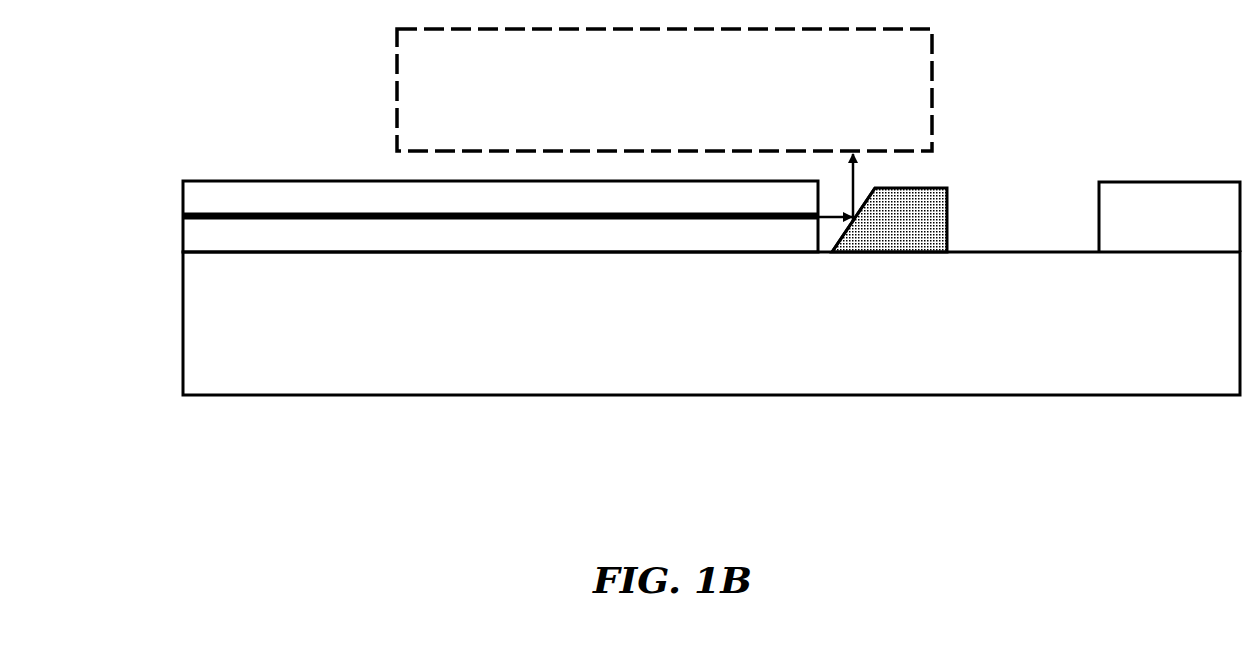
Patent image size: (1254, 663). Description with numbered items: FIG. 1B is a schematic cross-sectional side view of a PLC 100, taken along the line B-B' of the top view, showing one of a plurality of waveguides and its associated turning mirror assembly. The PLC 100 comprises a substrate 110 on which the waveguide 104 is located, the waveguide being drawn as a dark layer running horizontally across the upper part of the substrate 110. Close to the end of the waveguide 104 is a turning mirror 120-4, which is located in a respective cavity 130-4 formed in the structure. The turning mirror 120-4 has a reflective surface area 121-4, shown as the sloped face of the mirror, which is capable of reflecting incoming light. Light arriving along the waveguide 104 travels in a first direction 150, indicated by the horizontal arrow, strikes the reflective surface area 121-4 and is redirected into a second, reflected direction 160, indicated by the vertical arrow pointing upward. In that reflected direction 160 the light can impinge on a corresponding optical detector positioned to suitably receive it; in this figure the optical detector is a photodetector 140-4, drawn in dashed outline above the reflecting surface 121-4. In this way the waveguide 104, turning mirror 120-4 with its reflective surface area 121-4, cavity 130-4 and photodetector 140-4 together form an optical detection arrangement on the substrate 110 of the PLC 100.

The PLC 100 is at (352, 467).
The waveguide 104 is at (212, 214).
The substrate 110 is at (183, 322).
The turning mirror 120-4 is at (946, 188).
The reflective surface area 121-4 is at (843, 233).
The cavity 130-4 is at (1050, 205).
The photodetector 140-4 is at (932, 91).
The first direction 150 is at (838, 216).
The second direction 160 is at (851, 172).